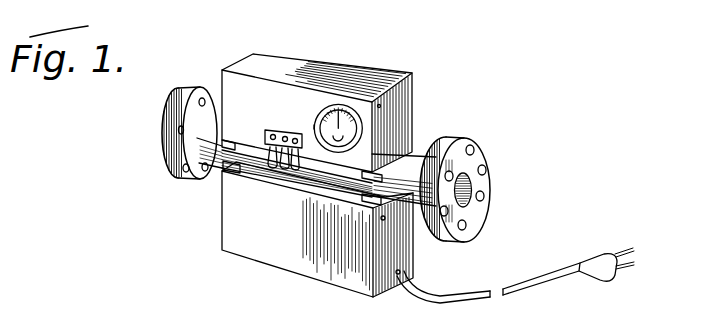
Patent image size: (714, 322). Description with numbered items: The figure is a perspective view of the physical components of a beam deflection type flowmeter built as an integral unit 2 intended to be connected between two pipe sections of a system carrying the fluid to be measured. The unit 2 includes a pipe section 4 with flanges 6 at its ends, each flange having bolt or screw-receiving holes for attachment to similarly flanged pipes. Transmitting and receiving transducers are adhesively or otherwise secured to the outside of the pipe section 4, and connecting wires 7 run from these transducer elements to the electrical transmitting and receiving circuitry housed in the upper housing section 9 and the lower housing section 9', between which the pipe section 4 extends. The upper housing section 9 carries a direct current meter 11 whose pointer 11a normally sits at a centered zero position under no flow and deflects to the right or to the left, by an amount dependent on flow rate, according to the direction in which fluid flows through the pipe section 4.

The integral unit 2 is at (213, 227).
The pipe section 4 is at (418, 156).
The flanges 6 is at (183, 88).
The connecting wires 7 is at (267, 138).
The upper housing section 9 is at (317, 99).
The lower housing section 9' is at (302, 229).
The direct current meter 11 is at (326, 111).
The pointer 11a is at (314, 127).